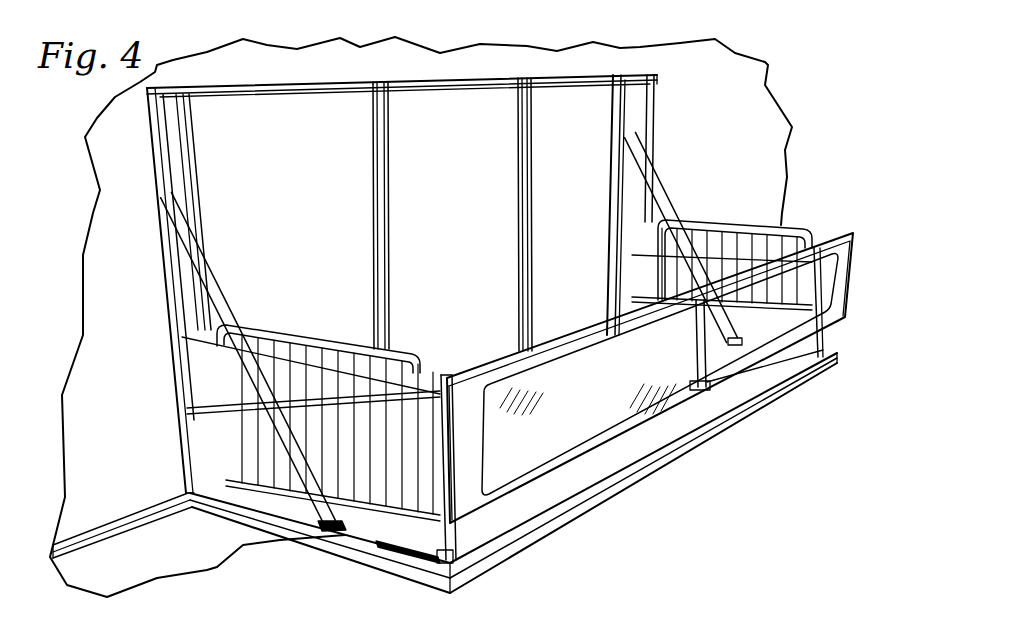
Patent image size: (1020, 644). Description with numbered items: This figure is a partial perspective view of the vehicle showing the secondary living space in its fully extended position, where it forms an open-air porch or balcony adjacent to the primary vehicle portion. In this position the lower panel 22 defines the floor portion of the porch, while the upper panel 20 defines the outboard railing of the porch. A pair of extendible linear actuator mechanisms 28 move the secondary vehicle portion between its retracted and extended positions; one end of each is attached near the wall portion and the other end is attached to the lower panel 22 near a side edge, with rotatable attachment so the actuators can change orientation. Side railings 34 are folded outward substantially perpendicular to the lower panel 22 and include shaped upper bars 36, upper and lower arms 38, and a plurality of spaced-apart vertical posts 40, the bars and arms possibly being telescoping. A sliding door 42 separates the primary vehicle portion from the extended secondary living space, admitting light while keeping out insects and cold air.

The upper panel 20 is at (580, 325).
The lower panel 22 is at (680, 460).
The linear actuator mechanisms 28 is at (213, 282).
The side railings 34 is at (177, 452).
The shaped upper bars 36 is at (278, 330).
The upper and lower arms 38 is at (312, 357).
The vertical posts 40 is at (240, 393).
The sliding door 42 is at (459, 178).